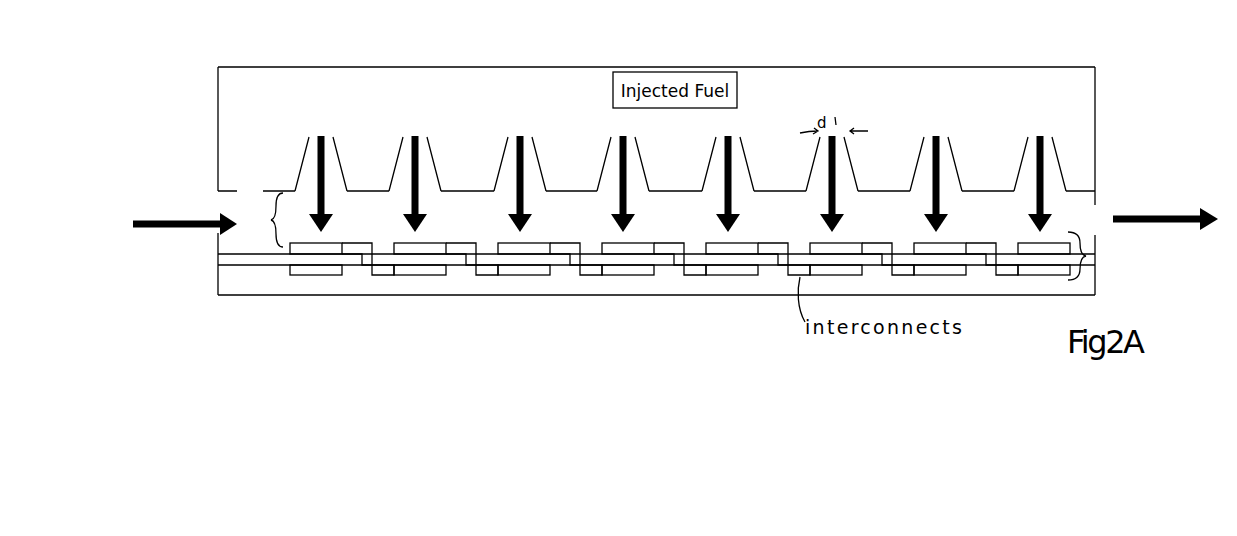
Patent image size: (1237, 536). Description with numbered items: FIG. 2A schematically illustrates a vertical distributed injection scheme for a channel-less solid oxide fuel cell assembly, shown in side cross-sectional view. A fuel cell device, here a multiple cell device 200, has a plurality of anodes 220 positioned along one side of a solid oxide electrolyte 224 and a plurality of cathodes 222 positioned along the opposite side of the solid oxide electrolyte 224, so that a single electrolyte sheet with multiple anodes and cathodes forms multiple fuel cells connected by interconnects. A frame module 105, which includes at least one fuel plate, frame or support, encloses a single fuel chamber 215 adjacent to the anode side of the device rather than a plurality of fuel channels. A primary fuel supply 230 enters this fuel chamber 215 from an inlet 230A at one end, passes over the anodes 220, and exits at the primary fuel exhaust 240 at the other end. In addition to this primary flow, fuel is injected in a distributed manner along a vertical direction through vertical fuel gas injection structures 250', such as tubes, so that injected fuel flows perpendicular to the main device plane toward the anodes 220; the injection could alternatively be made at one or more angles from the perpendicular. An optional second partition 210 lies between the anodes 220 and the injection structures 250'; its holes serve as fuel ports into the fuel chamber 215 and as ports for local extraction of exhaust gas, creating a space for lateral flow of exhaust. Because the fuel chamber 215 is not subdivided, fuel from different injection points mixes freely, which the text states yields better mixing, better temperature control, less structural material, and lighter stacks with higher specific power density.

The frame module 105 is at (882, 67).
The inlet 230A is at (218, 204).
The primary fuel supply 230 is at (174, 227).
The fuel chamber 215 is at (262, 220).
The vertical fuel gas injection structures 250' is at (678, 109).
The second partition 210 is at (565, 192).
The anodes 220 is at (393, 246).
The cathodes 222 is at (420, 270).
The multiple cell device 200 is at (1097, 242).
The solid oxide electrolyte 224 is at (1097, 262).
The primary fuel exhaust 240 is at (1097, 222).